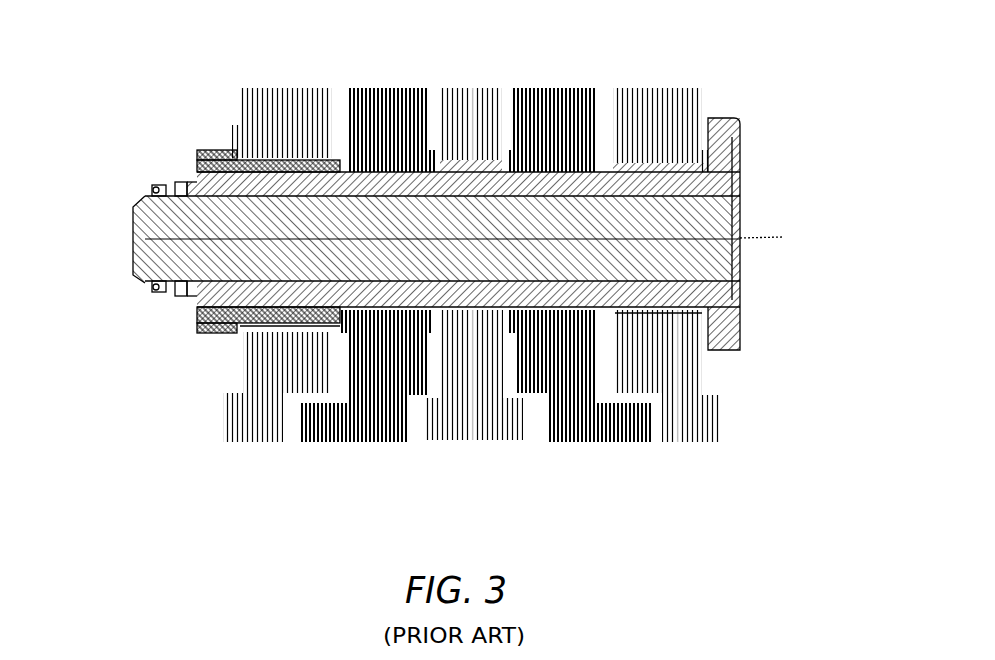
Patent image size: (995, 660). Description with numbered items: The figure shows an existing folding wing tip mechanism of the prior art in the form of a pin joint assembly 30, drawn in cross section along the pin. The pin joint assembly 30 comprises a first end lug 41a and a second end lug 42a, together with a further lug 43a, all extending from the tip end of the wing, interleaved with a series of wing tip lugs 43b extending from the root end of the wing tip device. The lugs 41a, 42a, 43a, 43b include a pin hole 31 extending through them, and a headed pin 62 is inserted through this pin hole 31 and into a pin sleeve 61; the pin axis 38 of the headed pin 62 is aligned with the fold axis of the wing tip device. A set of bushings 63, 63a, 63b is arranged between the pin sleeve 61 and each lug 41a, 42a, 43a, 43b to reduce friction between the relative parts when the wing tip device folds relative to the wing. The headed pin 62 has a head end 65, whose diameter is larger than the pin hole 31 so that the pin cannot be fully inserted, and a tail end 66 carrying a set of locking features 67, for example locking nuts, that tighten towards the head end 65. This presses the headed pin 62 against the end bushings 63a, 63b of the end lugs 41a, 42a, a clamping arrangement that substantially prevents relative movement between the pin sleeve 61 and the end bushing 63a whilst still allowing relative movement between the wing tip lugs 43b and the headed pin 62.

The pin joint assembly 30 is at (124, 381).
The pin hole 31 is at (640, 160).
The pin axis 38 is at (760, 237).
The first end lug 41a is at (695, 430).
The second end lug 42a is at (242, 437).
The lug 43a is at (457, 427).
The wing tip lugs 43b is at (385, 90).
The pin sleeve 61 is at (725, 330).
The headed pin 62 is at (692, 258).
The bushings 63 is at (350, 440).
The end bushing 63a is at (240, 332).
The end bushing 63b is at (690, 333).
The head end 65 is at (723, 223).
The tail end 66 is at (170, 263).
The locking features 67 is at (158, 190).